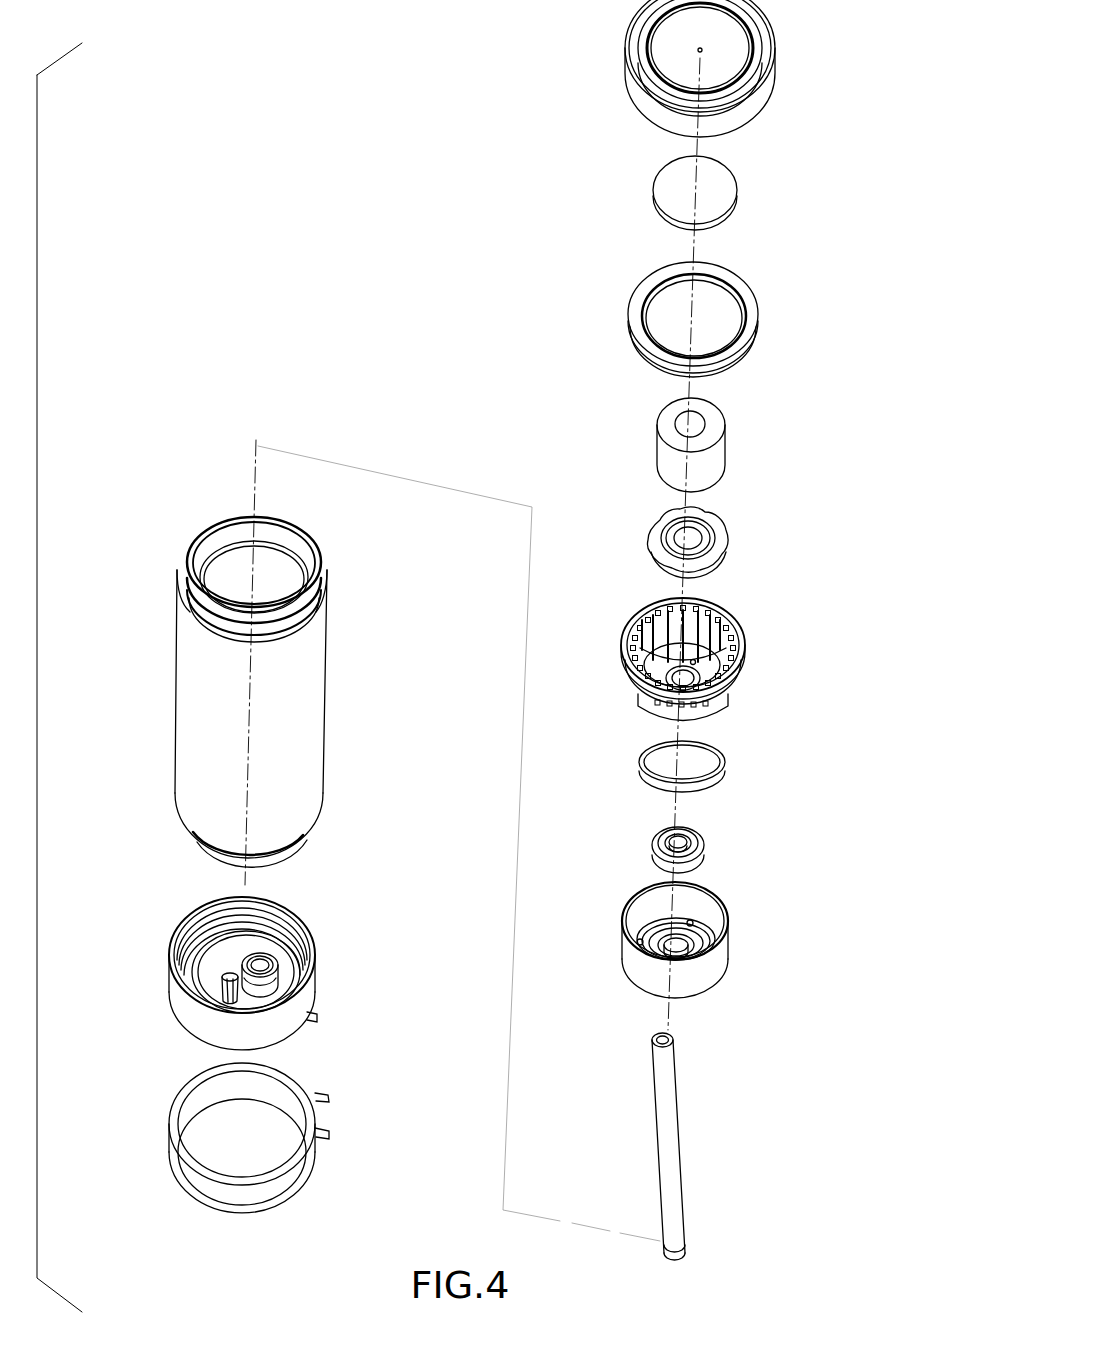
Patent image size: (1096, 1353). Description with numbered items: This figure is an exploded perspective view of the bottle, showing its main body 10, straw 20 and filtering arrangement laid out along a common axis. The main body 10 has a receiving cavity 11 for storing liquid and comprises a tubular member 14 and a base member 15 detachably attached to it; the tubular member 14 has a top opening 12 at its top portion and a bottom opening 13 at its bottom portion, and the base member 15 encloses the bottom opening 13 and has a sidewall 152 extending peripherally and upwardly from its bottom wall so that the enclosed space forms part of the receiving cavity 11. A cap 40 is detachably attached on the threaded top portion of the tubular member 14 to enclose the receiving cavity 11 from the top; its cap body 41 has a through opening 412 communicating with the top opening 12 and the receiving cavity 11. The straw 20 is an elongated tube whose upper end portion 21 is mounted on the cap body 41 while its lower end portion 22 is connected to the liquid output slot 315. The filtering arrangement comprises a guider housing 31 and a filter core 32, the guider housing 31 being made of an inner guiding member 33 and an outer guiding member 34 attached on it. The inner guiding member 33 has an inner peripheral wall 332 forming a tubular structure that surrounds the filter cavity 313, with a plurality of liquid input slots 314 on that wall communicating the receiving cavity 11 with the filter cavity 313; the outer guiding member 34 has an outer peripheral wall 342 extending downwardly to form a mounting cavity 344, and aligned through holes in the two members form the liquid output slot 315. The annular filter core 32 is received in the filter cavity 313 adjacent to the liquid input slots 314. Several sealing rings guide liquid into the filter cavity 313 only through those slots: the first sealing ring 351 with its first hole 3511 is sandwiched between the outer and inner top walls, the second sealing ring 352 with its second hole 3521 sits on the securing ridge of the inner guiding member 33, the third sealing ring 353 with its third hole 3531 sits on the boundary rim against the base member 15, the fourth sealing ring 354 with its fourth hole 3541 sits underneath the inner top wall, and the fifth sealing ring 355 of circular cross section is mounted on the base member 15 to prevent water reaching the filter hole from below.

The main body 10 is at (271, 660).
The receiving cavity 11 is at (242, 576).
The top opening 12 is at (208, 866).
The bottom opening 13 is at (227, 513).
The tubular member 14 is at (305, 752).
The base member 15 is at (707, 68).
The sidewall 152 is at (677, 118).
The straw 20 is at (733, 1146).
The upper end portion 21 is at (697, 1228).
The lower end portion 22 is at (695, 1073).
The guider housing 31 is at (694, 938).
The filter cavity 313 is at (702, 648).
The liquid input slots 314 is at (635, 642).
The liquid output slot 315 is at (668, 949).
The filter core 32 is at (716, 462).
The inner guiding member 33 is at (685, 666).
The inner peripheral wall 332 is at (697, 717).
The outer guiding member 34 is at (715, 963).
The outer peripheral wall 342 is at (638, 977).
The mounting cavity 344 is at (702, 905).
The first sealing ring 351 is at (684, 827).
The first hole 3511 is at (672, 834).
The second sealing ring 352 is at (775, 764).
The second hole 3521 is at (692, 761).
The third sealing ring 353 is at (625, 319).
The third hole 3531 is at (678, 313).
The fourth sealing ring 354 is at (774, 547).
The fourth hole 3541 is at (692, 541).
The fifth sealing ring 355 is at (720, 193).
The cap 40 is at (242, 976).
The cap body 41 is at (283, 1020).
The through opening 412 is at (264, 964).